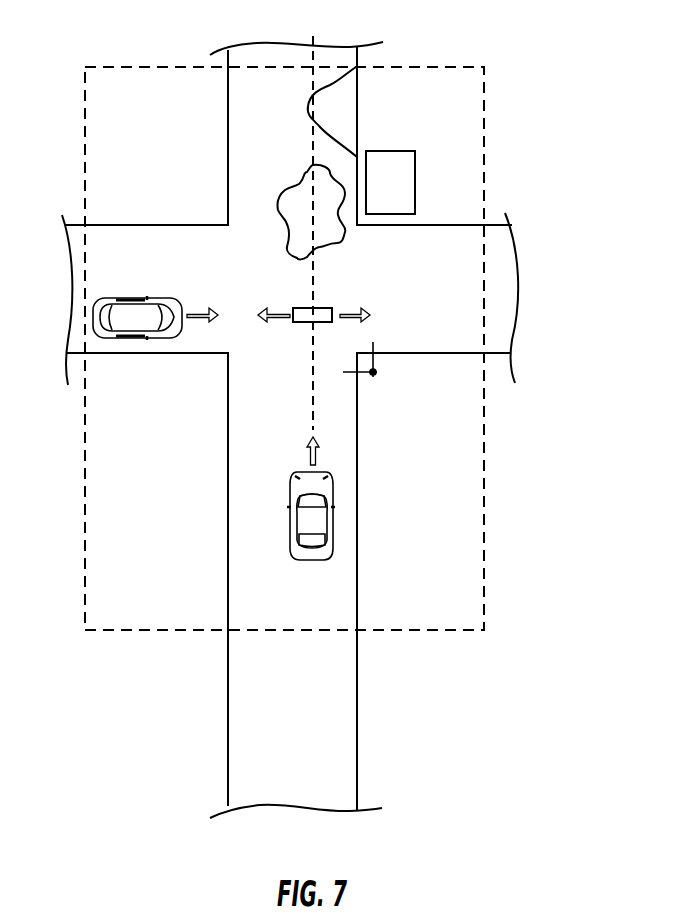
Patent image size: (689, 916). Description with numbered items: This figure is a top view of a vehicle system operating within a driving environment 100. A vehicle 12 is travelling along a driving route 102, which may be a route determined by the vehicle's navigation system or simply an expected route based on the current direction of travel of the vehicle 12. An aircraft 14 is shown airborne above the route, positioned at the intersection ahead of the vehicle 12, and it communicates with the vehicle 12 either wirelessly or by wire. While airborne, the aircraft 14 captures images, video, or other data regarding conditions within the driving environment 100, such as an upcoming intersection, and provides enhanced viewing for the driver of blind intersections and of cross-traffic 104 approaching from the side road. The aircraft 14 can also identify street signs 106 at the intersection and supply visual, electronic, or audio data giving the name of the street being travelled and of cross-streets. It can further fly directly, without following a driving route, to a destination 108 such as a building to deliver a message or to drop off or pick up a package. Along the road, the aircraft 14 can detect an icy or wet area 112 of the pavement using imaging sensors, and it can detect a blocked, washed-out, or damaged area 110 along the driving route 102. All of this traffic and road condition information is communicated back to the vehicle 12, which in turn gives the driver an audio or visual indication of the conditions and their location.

The vehicle 12 is at (333, 518).
The aircraft 14 is at (323, 308).
The driving environment 100 is at (463, 66).
The driving route 102 is at (313, 414).
The cross-traffic 104 is at (134, 339).
The street signs 106 is at (380, 372).
The destination 108 is at (397, 151).
The blocked, washed-out, and/or damaged area 110 is at (348, 102).
The icy or wet area 112 is at (296, 218).